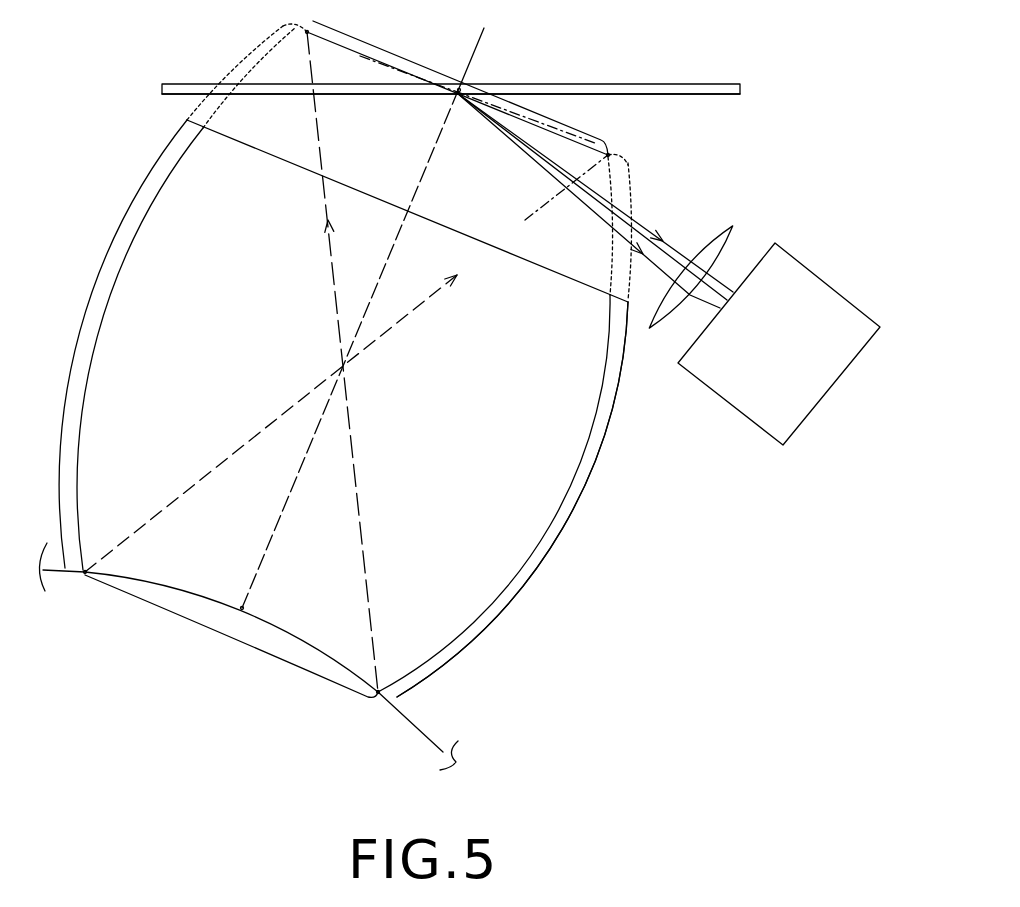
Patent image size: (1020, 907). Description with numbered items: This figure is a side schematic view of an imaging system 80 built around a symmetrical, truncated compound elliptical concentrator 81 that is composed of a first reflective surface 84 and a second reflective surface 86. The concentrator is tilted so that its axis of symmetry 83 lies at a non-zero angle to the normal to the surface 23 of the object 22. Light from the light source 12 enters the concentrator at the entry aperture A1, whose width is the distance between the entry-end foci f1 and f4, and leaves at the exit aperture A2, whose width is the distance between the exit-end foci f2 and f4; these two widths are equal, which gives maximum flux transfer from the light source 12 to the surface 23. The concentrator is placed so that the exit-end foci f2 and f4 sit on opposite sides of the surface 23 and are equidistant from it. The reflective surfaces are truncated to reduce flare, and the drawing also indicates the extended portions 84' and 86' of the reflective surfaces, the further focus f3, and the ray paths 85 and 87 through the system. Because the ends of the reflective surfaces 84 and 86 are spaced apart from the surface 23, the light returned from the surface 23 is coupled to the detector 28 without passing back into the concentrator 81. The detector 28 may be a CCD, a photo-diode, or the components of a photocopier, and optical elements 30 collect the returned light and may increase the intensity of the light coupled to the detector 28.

The light source 12 is at (408, 718).
The object 22 is at (691, 83).
The surface of the object 23 is at (690, 95).
The detector 28 is at (747, 388).
The optical elements 30 is at (728, 240).
The imaging system 80 is at (340, 345).
The compound elliptical concentrator 81 is at (550, 542).
The axis of symmetry 83 is at (387, 265).
The first reflective surface 84 is at (127, 345).
The extension of first mirror surface 84' is at (237, 65).
The ray path 85 is at (283, 413).
The second reflective surface 86 is at (518, 496).
The extension of second mirror surface 86' is at (658, 227).
The ray path 87 is at (360, 491).
The entry aperture A1 is at (230, 641).
The exit aperture A2 is at (463, 83).
The entry-end focus f1 is at (378, 692).
The exit-end focus f2 is at (608, 155).
The focal point f3 is at (85, 572).
The focus f4 is at (307, 32).